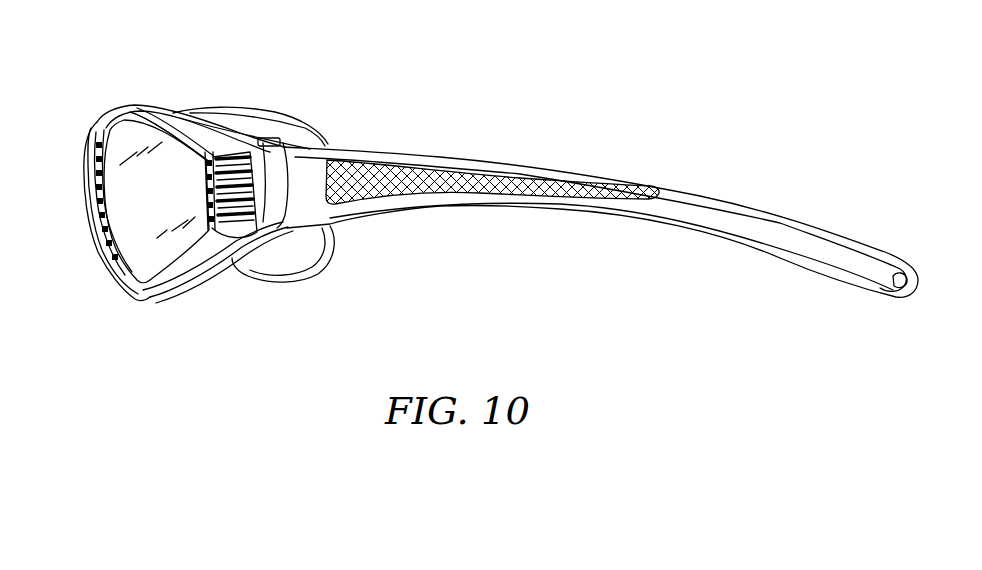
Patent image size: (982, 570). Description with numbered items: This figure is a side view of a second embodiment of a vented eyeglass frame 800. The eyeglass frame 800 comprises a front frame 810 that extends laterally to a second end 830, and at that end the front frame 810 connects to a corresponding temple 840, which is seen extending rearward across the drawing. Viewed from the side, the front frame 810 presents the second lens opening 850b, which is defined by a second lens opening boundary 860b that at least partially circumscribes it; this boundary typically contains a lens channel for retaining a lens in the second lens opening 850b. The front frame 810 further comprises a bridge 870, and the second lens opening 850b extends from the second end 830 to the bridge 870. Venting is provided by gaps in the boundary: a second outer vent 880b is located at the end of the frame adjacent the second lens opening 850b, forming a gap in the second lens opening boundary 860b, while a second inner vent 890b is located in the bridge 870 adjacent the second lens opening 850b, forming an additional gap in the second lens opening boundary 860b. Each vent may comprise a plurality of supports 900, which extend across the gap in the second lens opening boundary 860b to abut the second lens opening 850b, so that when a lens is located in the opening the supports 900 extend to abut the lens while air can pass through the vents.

The eyeglass frame 800 is at (506, 238).
The front frame 810 is at (133, 110).
The second end 830 is at (227, 152).
The temple 840 is at (682, 207).
The second lens opening 850b is at (147, 250).
The second lens opening boundary 860b is at (149, 297).
The bridge 870 is at (83, 150).
The second outer vent 880b is at (212, 220).
The second inner vent 890b is at (100, 194).
The supports 900 is at (193, 157).